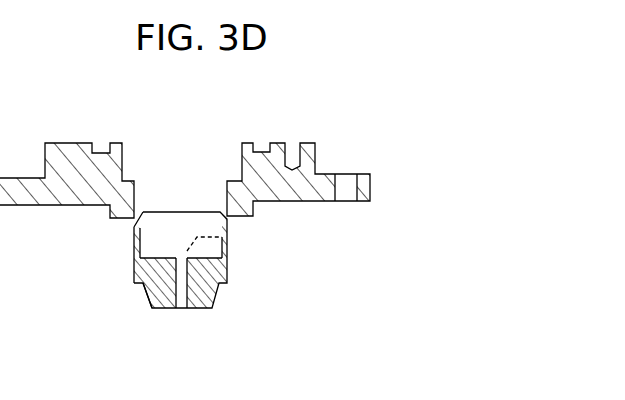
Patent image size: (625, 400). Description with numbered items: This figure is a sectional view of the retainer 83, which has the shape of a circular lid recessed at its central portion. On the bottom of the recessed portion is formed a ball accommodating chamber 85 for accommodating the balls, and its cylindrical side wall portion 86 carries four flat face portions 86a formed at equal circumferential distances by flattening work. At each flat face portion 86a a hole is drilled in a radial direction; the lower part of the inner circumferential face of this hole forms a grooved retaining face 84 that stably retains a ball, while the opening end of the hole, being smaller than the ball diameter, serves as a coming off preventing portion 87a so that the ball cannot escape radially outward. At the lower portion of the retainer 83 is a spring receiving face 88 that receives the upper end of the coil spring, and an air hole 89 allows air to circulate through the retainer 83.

The retainer 83 is at (268, 113).
The retaining face 84 is at (217, 297).
The ball accommodating chamber 85 is at (171, 218).
The side wall portion 86 is at (133, 262).
The flat face portion 86a is at (228, 275).
The coming off preventing portion 87a is at (228, 247).
The spring receiving face 88 is at (140, 288).
The air hole 89 is at (184, 301).